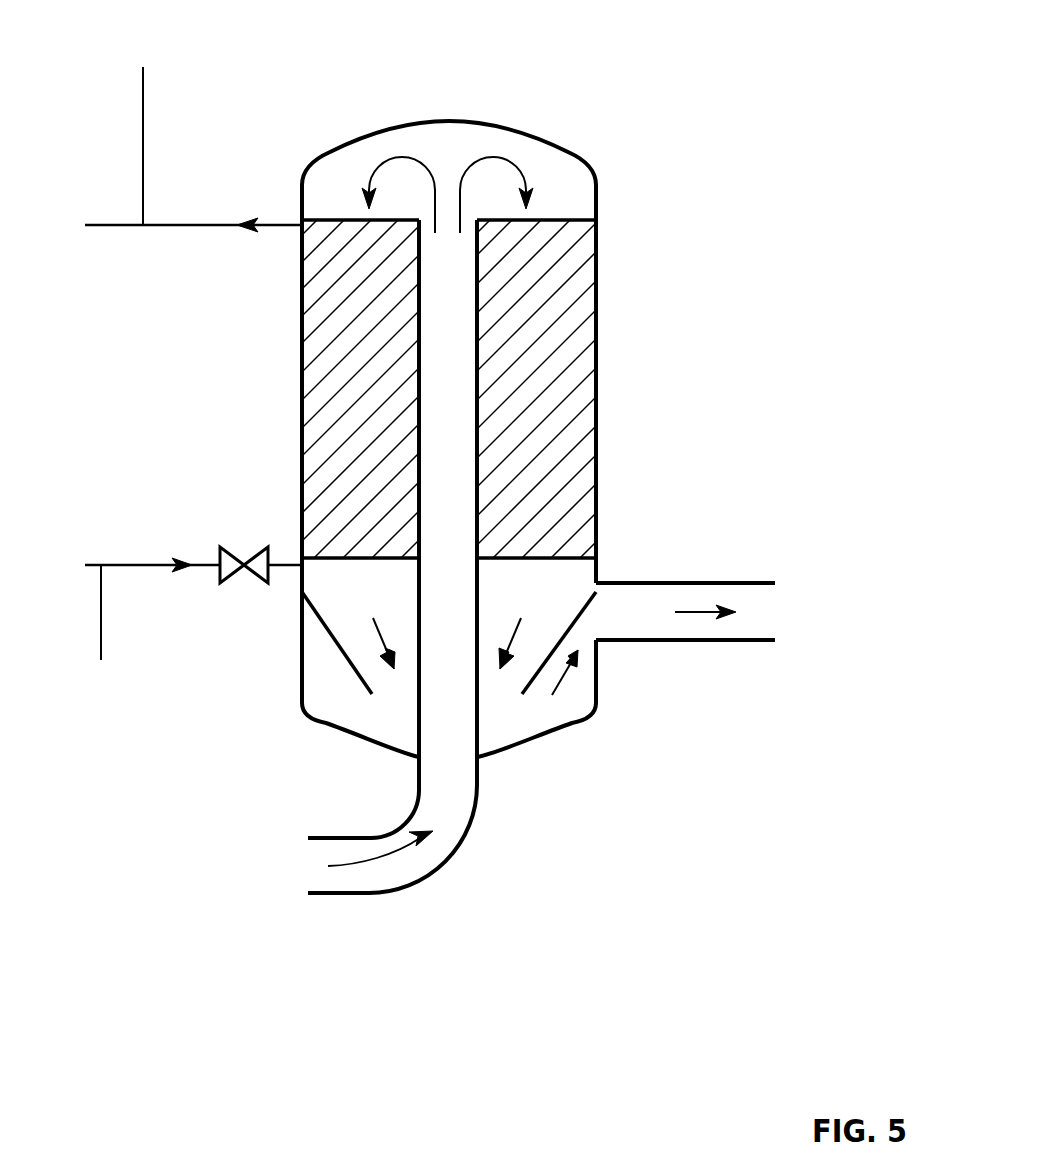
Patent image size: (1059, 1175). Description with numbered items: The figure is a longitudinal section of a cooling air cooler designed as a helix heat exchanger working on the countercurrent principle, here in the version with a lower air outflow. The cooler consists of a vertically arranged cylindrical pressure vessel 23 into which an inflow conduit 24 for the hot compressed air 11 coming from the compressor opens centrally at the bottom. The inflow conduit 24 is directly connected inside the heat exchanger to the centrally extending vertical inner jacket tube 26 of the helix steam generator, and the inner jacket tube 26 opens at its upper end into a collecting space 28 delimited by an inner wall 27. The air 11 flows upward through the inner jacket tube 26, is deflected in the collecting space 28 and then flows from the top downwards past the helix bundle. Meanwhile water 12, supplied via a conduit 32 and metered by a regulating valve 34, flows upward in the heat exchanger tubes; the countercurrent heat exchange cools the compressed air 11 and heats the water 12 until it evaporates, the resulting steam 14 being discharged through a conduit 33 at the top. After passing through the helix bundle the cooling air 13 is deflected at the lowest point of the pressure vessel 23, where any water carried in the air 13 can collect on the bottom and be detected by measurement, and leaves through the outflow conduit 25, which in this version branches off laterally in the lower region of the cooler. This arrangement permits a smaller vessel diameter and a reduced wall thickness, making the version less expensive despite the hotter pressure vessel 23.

The air 11 is at (264, 867).
The water 12 is at (184, 565).
The cooling air 13 is at (751, 609).
The steam 14 is at (247, 225).
The pressure vessel 23 is at (302, 703).
The inflow conduit 24 is at (447, 858).
The outflow conduit 25 is at (741, 580).
The inner jacket tube 26 is at (447, 415).
The inner wall 27 is at (505, 125).
The collecting space 28 is at (552, 172).
The conduit 32 is at (106, 630).
The conduit 33 is at (146, 129).
The regulating valve 34 is at (244, 570).